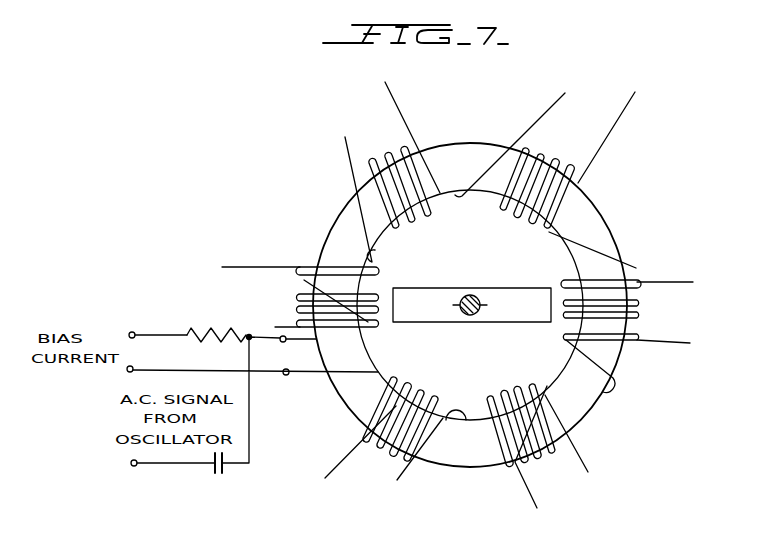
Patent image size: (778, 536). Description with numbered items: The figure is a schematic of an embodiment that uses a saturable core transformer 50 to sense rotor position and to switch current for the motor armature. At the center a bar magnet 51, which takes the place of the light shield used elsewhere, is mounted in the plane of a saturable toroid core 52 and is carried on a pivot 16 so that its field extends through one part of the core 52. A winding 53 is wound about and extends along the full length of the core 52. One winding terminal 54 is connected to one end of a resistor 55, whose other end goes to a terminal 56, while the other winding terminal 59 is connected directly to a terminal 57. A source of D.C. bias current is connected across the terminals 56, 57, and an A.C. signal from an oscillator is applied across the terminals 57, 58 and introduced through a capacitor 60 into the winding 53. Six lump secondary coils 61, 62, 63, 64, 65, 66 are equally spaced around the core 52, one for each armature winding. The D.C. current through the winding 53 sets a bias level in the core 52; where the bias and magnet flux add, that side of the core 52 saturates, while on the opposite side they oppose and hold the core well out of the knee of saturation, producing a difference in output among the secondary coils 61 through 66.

The pivot shaft 16 is at (470, 294).
The saturable core transformer 50 is at (623, 214).
The bar magnet 51 is at (532, 288).
The saturable toroid core 52 is at (463, 468).
The winding 53 is at (458, 412).
The winding terminal 54 is at (283, 342).
The resistor 55 is at (213, 333).
The terminal 56 is at (132, 332).
The terminal 57 is at (128, 372).
The terminal 58 is at (133, 466).
The winding terminal 59 is at (286, 375).
The capacitor 60 is at (221, 475).
The secondary coil 61 is at (420, 390).
The secondary coil 62 is at (518, 392).
The secondary coil 63 is at (563, 318).
The secondary coil 64 is at (520, 216).
The secondary coil 65 is at (410, 233).
The secondary coil 66 is at (369, 290).